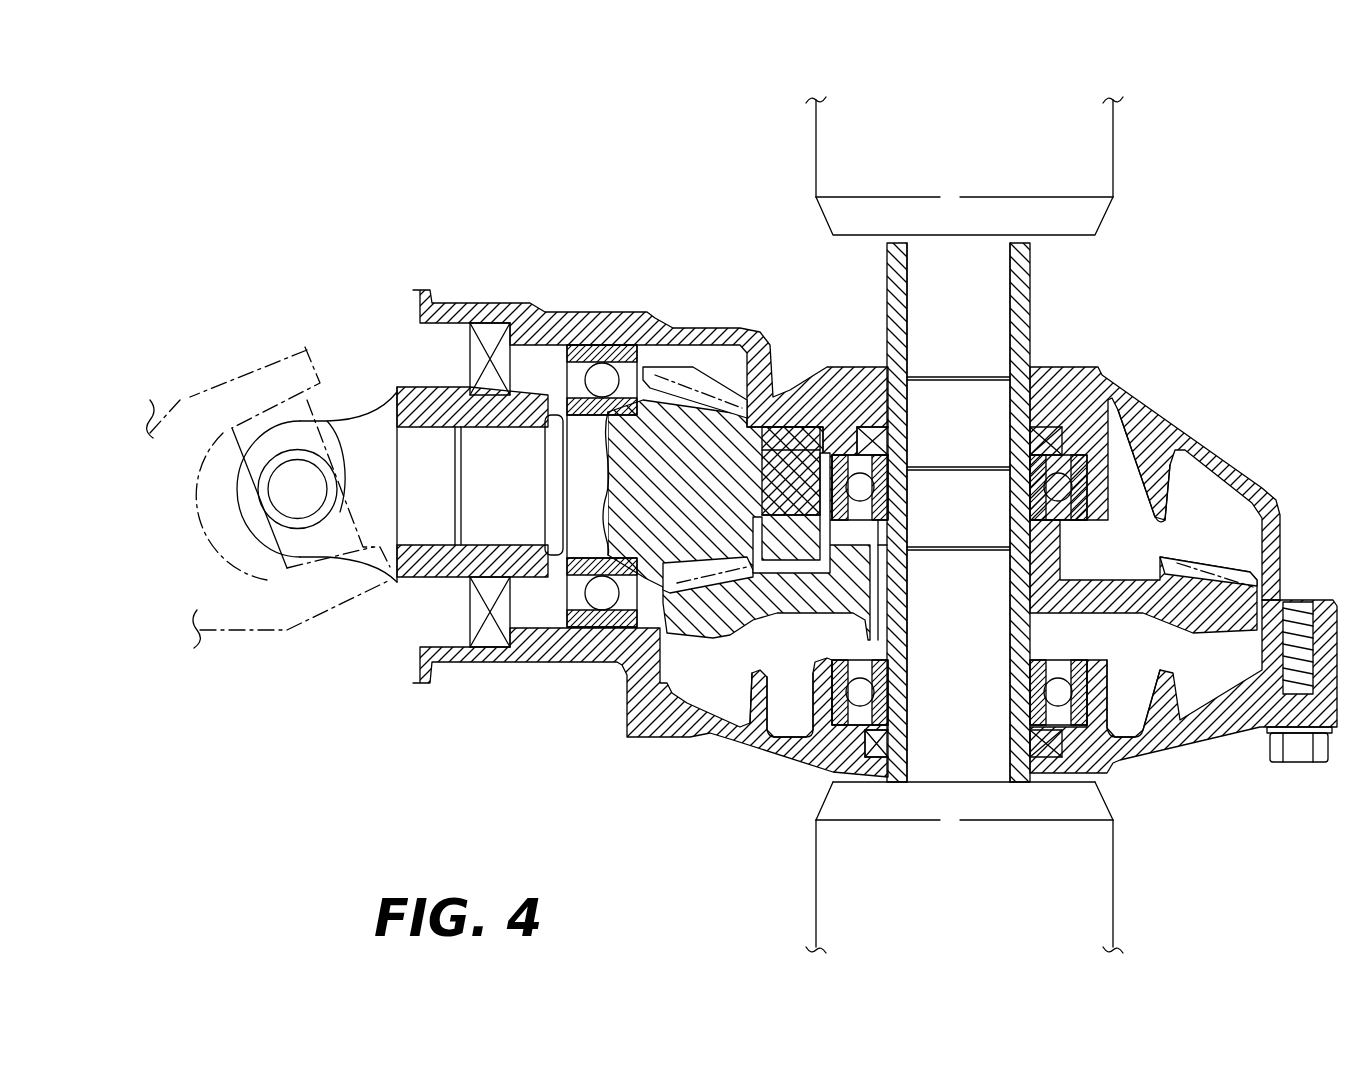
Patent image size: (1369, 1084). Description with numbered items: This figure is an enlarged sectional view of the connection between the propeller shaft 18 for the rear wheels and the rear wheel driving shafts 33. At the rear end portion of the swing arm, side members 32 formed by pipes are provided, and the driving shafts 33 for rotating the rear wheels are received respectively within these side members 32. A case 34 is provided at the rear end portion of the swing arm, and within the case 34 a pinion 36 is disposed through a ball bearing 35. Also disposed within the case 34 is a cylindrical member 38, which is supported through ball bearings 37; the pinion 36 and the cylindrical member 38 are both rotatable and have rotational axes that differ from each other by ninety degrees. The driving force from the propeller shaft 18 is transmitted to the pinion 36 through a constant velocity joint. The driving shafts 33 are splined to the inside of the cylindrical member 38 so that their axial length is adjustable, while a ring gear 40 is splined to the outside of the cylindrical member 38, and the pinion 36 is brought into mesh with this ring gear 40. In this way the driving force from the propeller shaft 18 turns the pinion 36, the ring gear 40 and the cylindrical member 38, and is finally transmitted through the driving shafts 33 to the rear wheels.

The propeller shaft for rear wheels 18 is at (175, 398).
The side members 32 is at (1111, 151).
The driving shafts 33 is at (984, 298).
The case 34 is at (700, 325).
The ball bearing 35 is at (604, 365).
The pinion 36 is at (742, 378).
The ball bearings 37 is at (1068, 485).
The cylindrical member 38 is at (1032, 333).
The ring gear 40 is at (705, 625).